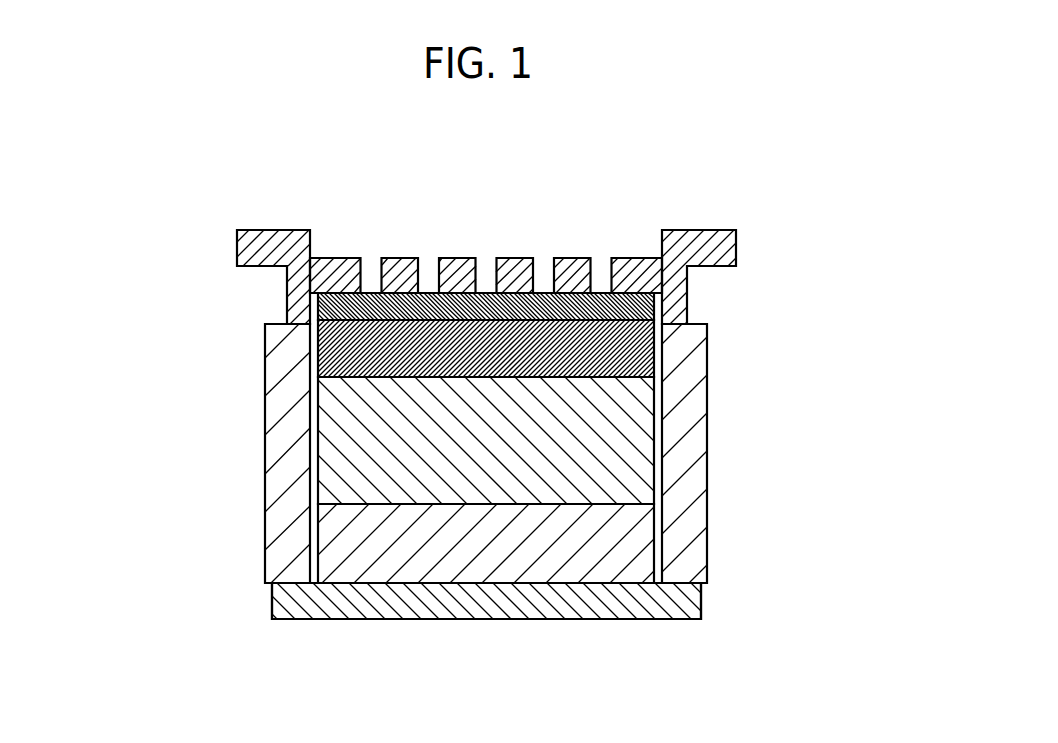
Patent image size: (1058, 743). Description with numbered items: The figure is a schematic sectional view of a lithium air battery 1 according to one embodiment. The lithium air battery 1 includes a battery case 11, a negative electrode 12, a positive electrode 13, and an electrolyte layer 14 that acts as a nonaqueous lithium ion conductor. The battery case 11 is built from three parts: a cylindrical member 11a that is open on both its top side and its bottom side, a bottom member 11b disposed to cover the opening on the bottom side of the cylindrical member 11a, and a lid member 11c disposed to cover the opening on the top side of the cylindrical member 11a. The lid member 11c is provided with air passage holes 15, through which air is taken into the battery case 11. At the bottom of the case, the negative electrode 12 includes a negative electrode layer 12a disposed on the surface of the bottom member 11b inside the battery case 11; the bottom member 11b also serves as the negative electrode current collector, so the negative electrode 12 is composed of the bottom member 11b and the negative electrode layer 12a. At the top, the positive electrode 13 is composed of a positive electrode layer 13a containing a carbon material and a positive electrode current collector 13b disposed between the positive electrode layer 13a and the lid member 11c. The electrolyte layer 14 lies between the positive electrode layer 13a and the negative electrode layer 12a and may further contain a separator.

The lithium air battery 1 is at (474, 345).
The battery case 11 is at (445, 427).
The cylindrical member 11a is at (273, 425).
The bottom member 11b is at (473, 558).
The lid member 11c is at (295, 295).
The negative electrode 12 is at (576, 562).
The negative electrode layer 12a is at (625, 541).
The positive electrode 13 is at (599, 344).
The positive electrode layer 13a is at (640, 355).
The positive electrode current collector 13b is at (647, 298).
The electrolyte layer 14 is at (640, 433).
The air passage holes 15 is at (367, 259).